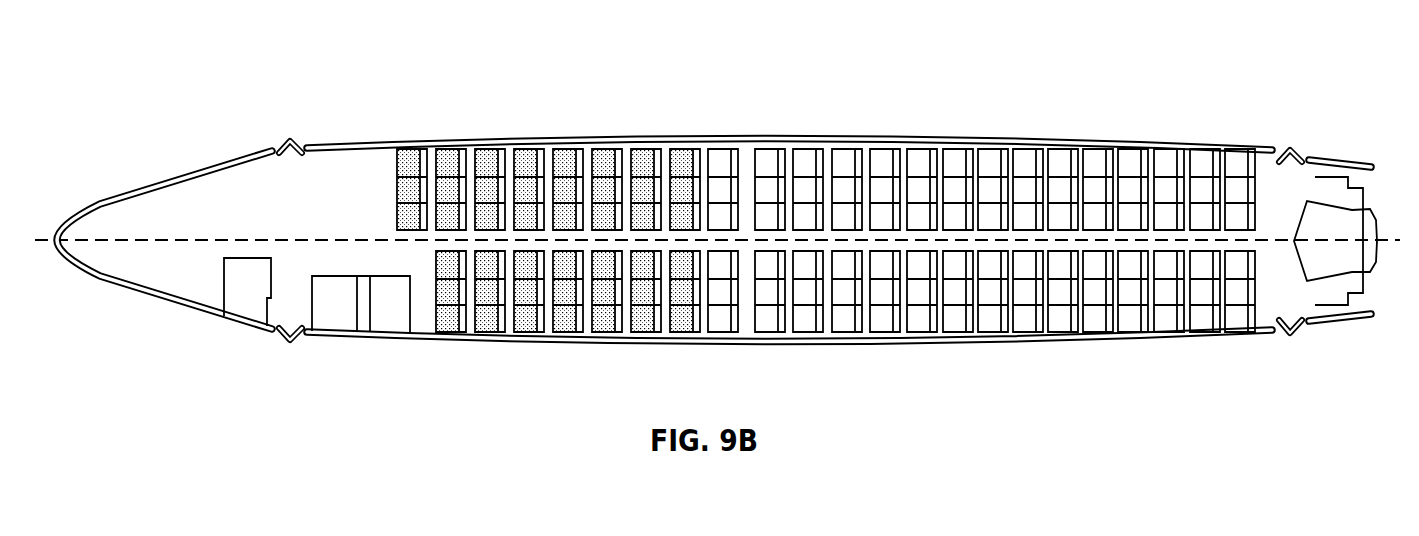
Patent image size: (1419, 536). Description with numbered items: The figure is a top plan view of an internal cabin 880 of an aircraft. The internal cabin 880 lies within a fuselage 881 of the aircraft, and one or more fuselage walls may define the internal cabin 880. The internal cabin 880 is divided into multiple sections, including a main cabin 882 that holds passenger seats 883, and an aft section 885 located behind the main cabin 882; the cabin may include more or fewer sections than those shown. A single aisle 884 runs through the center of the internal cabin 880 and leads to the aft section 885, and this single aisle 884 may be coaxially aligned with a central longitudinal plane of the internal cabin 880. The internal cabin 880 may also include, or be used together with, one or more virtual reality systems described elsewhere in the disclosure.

The internal cabin 880 is at (306, 80).
The fuselage 881 is at (512, 140).
The main cabin 882 is at (450, 165).
The passenger seats 883 is at (722, 170).
The single aisle 884 is at (845, 234).
The aft section 885 is at (1277, 175).